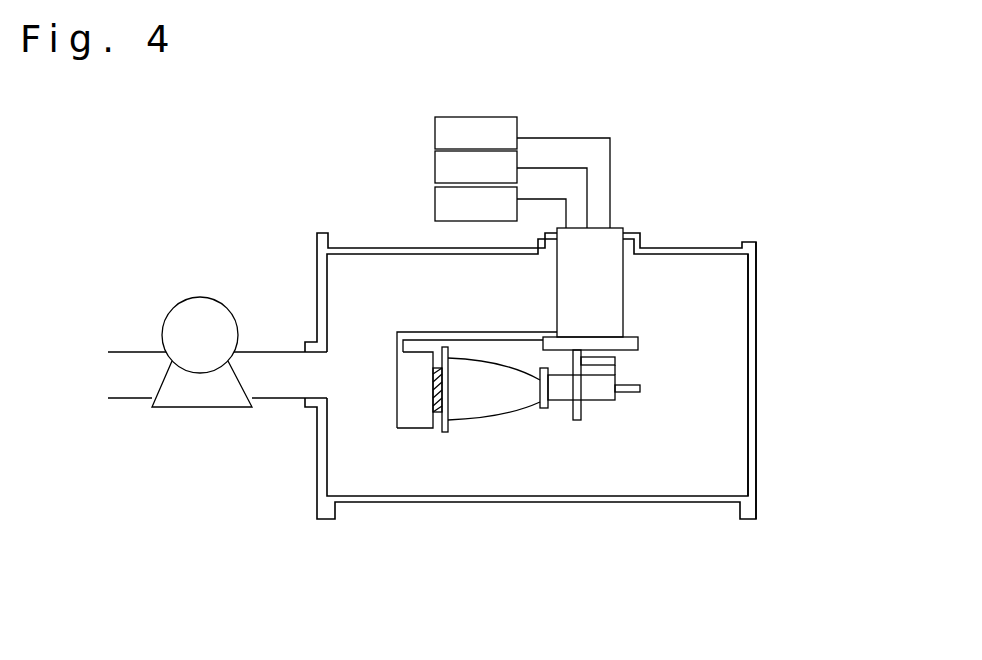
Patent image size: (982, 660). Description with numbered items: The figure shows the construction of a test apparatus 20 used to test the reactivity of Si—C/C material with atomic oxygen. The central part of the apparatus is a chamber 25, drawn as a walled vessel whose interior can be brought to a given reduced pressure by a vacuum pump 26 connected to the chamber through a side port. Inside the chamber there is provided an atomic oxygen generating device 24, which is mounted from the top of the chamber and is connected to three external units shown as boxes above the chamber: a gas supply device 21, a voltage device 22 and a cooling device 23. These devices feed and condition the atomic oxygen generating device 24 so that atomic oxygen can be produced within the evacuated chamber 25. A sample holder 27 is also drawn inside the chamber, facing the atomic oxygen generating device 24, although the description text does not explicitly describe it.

The test apparatus 20 is at (760, 267).
The gas supply device 21 is at (522, 172).
The voltage device 22 is at (511, 189).
The cooling device 23 is at (500, 207).
The atomic oxygen generating device 24 is at (620, 410).
The chamber 25 is at (757, 353).
The vacuum pump 26 is at (197, 387).
The sample holder 27 is at (434, 404).